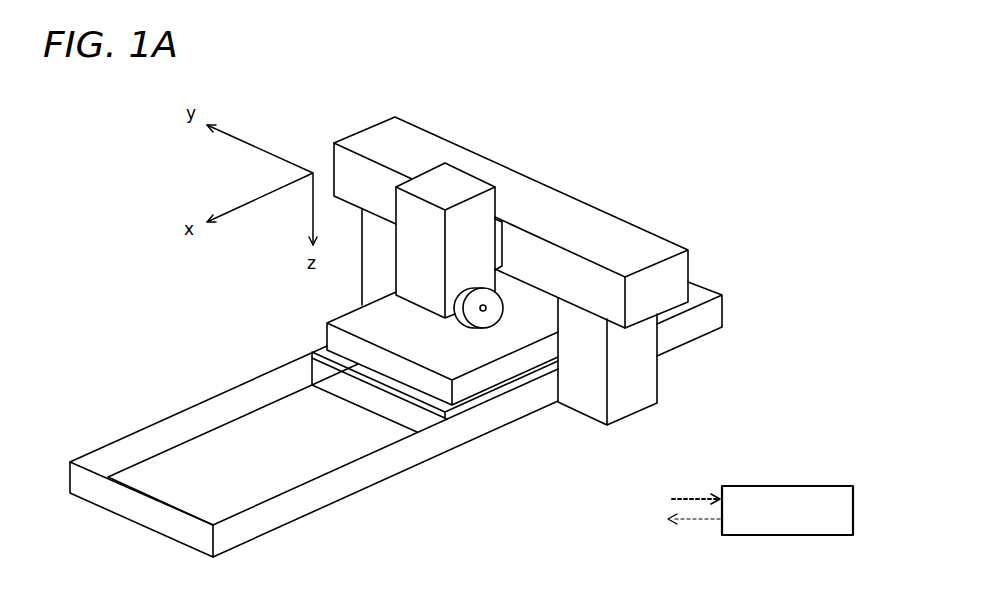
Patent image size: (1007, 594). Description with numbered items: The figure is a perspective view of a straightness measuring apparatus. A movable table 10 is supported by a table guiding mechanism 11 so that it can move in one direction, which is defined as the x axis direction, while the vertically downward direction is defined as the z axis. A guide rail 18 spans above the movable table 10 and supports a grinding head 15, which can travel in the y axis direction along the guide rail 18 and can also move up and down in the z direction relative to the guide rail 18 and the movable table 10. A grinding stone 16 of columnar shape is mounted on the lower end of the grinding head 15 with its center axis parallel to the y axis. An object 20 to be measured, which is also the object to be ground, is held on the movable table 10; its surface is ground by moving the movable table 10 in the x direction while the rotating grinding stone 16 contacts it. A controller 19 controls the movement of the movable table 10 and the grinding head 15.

The movable table 10 is at (323, 377).
The table guiding mechanism 11 is at (322, 497).
The grinding head 15 is at (445, 187).
The grinding stone 16 is at (490, 323).
The guide rail 18 is at (532, 190).
The controller 19 is at (765, 486).
The object to be measured 20 is at (335, 337).